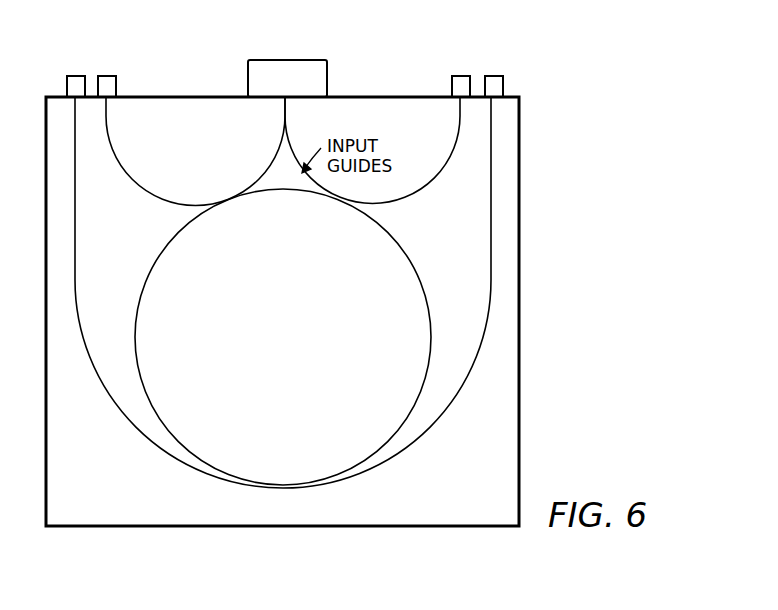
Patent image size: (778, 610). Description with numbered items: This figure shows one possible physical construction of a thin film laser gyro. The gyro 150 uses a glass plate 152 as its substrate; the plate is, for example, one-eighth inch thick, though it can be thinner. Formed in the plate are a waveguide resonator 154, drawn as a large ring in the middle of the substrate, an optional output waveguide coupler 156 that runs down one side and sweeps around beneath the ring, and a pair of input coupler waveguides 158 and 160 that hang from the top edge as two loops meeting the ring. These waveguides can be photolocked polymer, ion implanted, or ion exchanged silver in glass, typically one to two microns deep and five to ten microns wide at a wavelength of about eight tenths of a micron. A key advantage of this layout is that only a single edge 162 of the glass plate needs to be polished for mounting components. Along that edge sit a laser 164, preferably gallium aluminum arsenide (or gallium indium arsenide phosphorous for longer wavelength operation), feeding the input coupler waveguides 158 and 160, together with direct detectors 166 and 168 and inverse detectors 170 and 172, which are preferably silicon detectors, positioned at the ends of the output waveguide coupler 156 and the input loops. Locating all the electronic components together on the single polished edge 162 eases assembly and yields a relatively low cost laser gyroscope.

The gyro 150 is at (526, 395).
The glass plate 152 is at (464, 501).
The waveguide resonator 154 is at (405, 262).
The output waveguide coupler 156 is at (80, 316).
The input coupler waveguide 158 is at (130, 172).
The input coupler waveguide 160 is at (445, 165).
The single polished edge 162 is at (178, 55).
The laser 164 is at (291, 60).
The direct detector 166 is at (76, 75).
The direct detector 168 is at (493, 75).
The inverse detector 170 is at (106, 75).
The inverse detector 172 is at (461, 75).